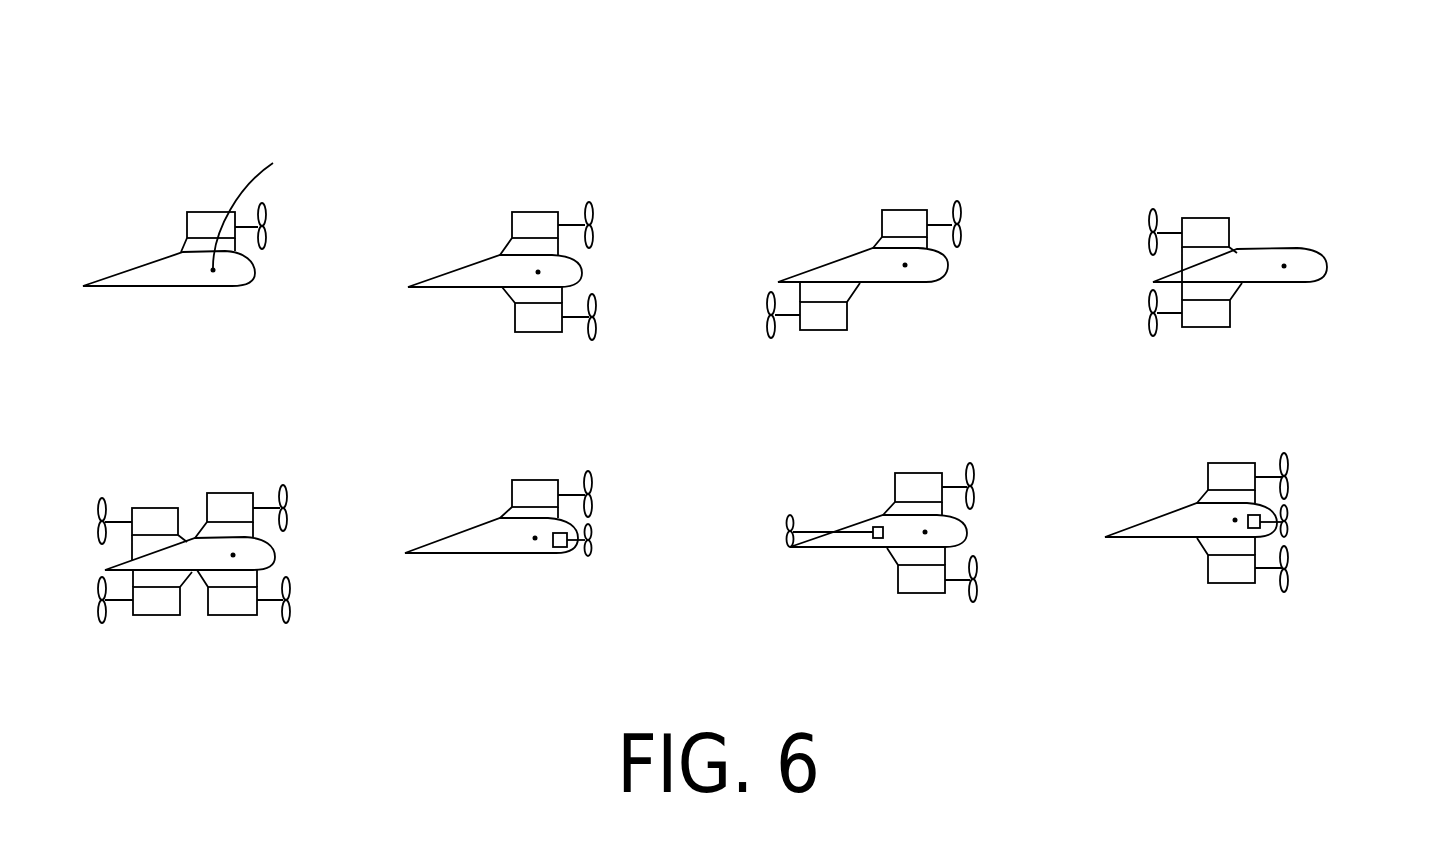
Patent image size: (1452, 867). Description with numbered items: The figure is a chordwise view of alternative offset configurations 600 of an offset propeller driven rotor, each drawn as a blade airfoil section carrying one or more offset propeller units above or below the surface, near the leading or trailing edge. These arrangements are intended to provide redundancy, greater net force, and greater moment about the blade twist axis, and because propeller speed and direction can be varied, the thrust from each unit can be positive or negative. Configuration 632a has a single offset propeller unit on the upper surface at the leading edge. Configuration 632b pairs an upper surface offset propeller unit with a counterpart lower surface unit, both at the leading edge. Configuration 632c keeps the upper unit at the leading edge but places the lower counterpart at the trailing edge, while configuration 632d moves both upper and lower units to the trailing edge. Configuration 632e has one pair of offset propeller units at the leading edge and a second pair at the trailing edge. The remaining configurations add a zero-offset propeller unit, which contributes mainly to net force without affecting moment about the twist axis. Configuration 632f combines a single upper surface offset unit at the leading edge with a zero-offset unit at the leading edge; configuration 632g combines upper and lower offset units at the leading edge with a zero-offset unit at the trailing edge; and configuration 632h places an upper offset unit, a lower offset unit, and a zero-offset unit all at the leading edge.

The alternative offset configurations 600 is at (1450, 62).
The configuration 632a is at (202, 204).
The configuration 632b is at (502, 231).
The configuration 632c is at (864, 229).
The configuration 632d is at (1238, 229).
The configuration 632e is at (194, 510).
The configuration 632f is at (498, 478).
The configuration 632g is at (882, 500).
The configuration 632h is at (1196, 493).